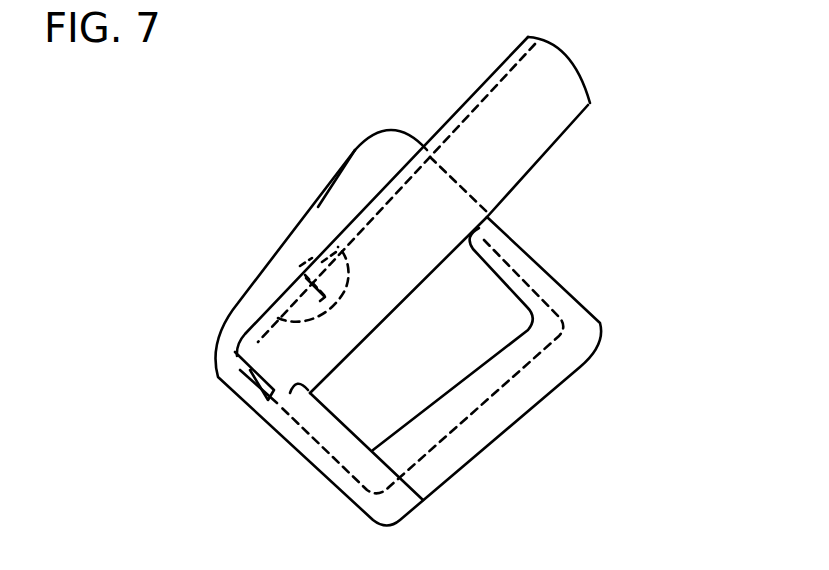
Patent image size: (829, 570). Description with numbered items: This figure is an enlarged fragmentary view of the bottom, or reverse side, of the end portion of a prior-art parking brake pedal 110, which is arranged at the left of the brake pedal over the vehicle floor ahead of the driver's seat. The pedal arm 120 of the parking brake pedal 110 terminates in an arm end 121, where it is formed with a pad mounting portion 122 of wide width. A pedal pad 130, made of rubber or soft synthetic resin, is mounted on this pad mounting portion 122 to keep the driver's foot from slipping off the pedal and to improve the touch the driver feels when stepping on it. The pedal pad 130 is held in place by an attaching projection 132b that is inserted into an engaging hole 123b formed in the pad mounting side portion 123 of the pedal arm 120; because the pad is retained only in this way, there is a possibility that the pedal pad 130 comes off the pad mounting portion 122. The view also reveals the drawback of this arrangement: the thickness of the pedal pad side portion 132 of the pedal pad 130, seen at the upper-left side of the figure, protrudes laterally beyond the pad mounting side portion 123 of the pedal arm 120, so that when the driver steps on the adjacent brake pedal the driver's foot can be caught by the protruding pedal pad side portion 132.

The parking brake pedal 110 is at (240, 210).
The pedal arm 120 is at (588, 108).
The arm end 121 is at (236, 366).
The pad mounting portion 122 is at (432, 394).
The pad mounting side portion 123 is at (374, 200).
The engaging hole 123b is at (307, 262).
The pedal pad 130 is at (608, 322).
The pedal pad side portion 132 is at (318, 207).
The attaching projection 132b is at (278, 318).